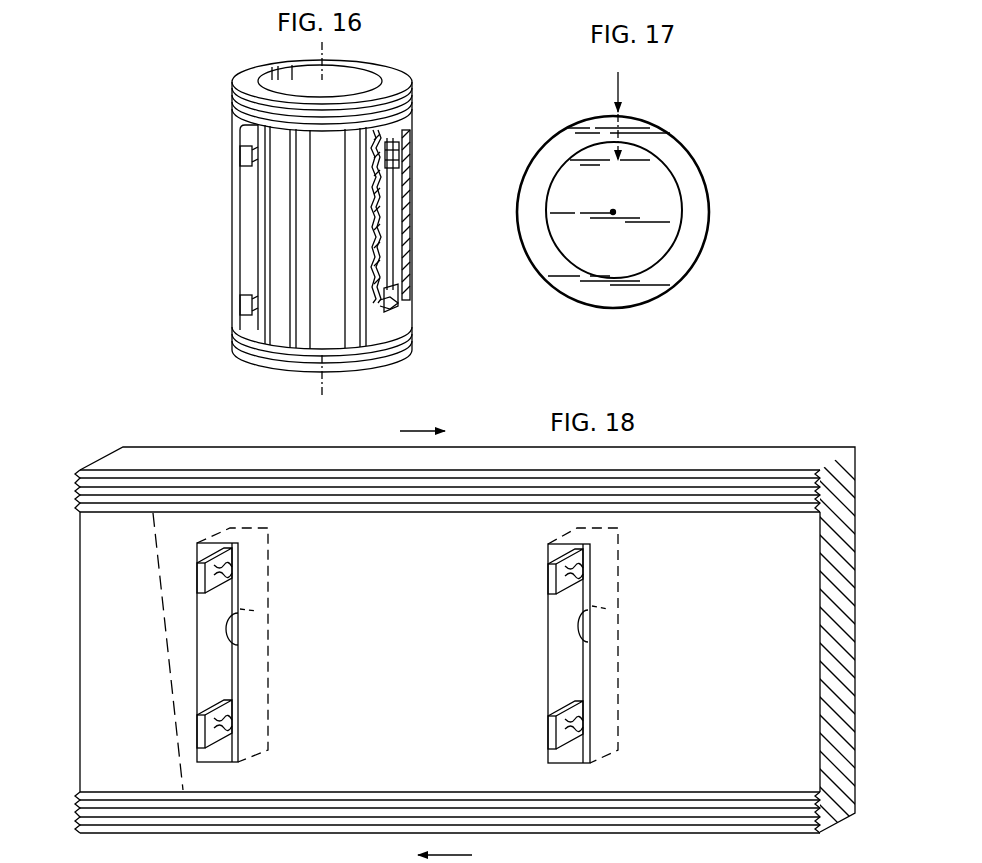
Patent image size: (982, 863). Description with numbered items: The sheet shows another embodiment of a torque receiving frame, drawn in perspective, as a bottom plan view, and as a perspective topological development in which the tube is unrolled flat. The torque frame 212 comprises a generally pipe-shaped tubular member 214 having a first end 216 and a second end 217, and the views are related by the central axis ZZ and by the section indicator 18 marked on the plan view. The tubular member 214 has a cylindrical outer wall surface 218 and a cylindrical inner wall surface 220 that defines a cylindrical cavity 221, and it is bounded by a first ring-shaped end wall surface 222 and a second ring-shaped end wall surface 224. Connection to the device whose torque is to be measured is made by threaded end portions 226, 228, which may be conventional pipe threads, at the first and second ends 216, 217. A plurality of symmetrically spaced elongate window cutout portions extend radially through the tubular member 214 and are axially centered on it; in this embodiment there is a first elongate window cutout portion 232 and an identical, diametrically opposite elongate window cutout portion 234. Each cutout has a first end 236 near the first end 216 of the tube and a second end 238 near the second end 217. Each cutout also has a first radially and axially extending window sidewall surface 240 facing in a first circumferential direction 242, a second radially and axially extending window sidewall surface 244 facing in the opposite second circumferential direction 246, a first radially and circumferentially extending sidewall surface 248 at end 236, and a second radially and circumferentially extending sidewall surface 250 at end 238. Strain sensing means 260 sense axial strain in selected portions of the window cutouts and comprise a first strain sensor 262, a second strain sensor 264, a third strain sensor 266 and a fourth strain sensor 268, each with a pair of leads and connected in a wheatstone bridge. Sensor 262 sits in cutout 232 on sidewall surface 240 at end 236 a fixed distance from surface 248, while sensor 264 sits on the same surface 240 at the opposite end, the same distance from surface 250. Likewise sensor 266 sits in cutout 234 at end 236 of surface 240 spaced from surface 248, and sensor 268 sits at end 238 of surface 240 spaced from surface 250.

In FIG. 16, the central axis ZZ is at (310, 48).
In FIG. 17, the central axis ZZ is at (616, 210).
In FIG. 17, the display means 18 is at (627, 132).
In FIG. 16, the torque frame 212 is at (417, 123).
In FIG. 17, the torque frame 212 is at (672, 202).
In FIG. 18, the torque frame 212 is at (470, 642).
In FIG. 16, the tubular member 214 is at (417, 172).
In FIG. 17, the tubular member 214 is at (713, 212).
In FIG. 16, the first end 216 is at (405, 347).
In FIG. 18, the first end 216 is at (80, 780).
In FIG. 16, the second end 217 is at (412, 85).
In FIG. 18, the second end 217 is at (90, 533).
In FIG. 16, the cylindrical outer wall surface 218 is at (237, 125).
In FIG. 17, the cylindrical outer wall surface 218 is at (612, 308).
In FIG. 16, the cylindrical inner wall surface 220 is at (257, 73).
In FIG. 17, the cylindrical inner wall surface 220 is at (598, 279).
In FIG. 17, the cylindrical cavity 221 is at (652, 248).
In FIG. 17, the first ring-shaped end wall surface 222 is at (677, 273).
In FIG. 16, the second ring-shaped end wall surface 224 is at (388, 72).
In FIG. 16, the threaded end portion 226 is at (233, 345).
In FIG. 16, the threaded end portion 228 is at (233, 102).
In FIG. 16, the first elongate window cutout portion 232 is at (215, 227).
In FIG. 18, the first elongate window cutout portion 232 is at (210, 644).
In FIG. 16, the second elongate window cutout portion 234 is at (397, 225).
In FIG. 18, the second elongate window cutout portion 234 is at (565, 630).
In FIG. 16, the first end of window cutout portion 236 is at (242, 317).
In FIG. 18, the first end of window cutout portion 236 is at (240, 762).
In FIG. 16, the second end of window cutout portion 238 is at (253, 148).
In FIG. 18, the second end of window cutout portion 238 is at (245, 545).
In FIG. 18, the first window sidewall surface 240 is at (205, 664).
In FIG. 16, the first circumferential direction 242 is at (307, 392).
In FIG. 16, the second window sidewall surface 244 is at (387, 202).
In FIG. 18, the second window sidewall surface 244 is at (240, 628).
In FIG. 16, the second circumferential direction 246 is at (348, 392).
In FIG. 18, the first radially and circumferentially extending sidewall surface 248 is at (218, 755).
In FIG. 18, the second radially and circumferentially extending sidewall surface 250 is at (200, 547).
In FIG. 16, the strain sensing means 260 is at (220, 168).
In FIG. 16, the first strain sensor 262 is at (240, 306).
In FIG. 18, the first strain sensor 262 is at (197, 725).
In FIG. 16, the second strain sensor 264 is at (237, 156).
In FIG. 18, the second strain sensor 264 is at (197, 580).
In FIG. 16, the third strain sensor 266 is at (400, 300).
In FIG. 18, the third strain sensor 266 is at (548, 728).
In FIG. 16, the fourth strain sensor 268 is at (408, 148).
In FIG. 18, the fourth strain sensor 268 is at (548, 575).